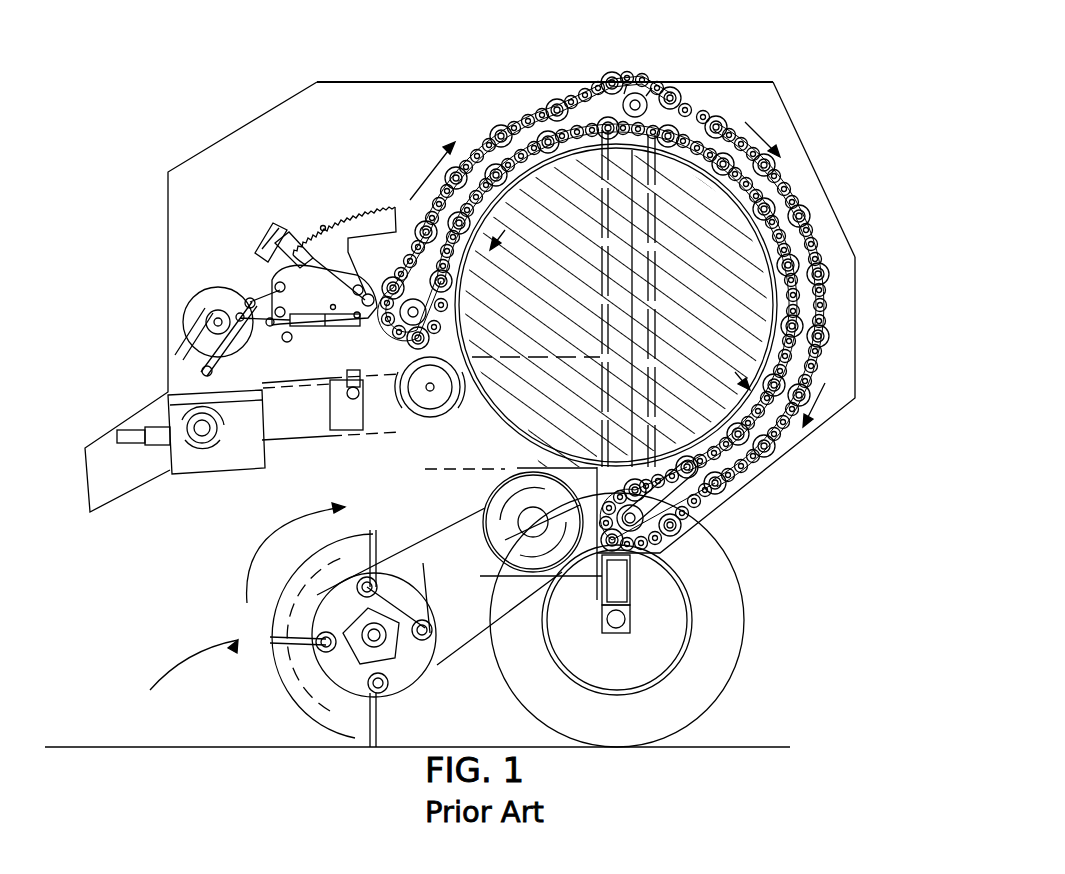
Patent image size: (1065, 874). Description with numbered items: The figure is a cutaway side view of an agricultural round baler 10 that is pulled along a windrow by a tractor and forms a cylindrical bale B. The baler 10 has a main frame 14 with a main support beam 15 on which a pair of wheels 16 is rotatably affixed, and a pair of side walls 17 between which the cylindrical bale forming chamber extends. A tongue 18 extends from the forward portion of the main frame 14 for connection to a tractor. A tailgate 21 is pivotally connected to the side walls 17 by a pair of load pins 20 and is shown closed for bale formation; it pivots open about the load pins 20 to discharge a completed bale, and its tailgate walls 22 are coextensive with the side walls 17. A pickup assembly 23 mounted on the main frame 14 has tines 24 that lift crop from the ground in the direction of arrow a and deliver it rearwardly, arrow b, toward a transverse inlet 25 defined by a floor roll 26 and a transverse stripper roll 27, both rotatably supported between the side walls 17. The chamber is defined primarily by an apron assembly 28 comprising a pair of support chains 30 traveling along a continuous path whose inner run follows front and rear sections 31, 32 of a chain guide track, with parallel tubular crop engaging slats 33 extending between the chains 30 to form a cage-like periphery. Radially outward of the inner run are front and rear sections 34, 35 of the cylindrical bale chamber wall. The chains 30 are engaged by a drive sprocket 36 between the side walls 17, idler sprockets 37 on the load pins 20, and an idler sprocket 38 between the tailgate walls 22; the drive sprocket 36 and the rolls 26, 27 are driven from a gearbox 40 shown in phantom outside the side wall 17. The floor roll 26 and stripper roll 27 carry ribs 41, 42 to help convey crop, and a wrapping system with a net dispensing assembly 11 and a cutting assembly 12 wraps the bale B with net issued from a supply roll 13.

The round baler 10 is at (920, 72).
The net dispensing assembly 11 is at (262, 215).
The cutting assembly 12 is at (317, 408).
The supply roll 13 is at (188, 298).
The main frame 14 is at (390, 82).
The main support beam 15 is at (690, 582).
The wheels 16 is at (742, 645).
The side walls 17 is at (258, 140).
The tongue 18 is at (108, 490).
The load pins 20 is at (648, 85).
The tailgate 21 is at (833, 200).
The tailgate walls 22 is at (842, 385).
The pickup assembly 23 is at (250, 620).
The tines 24 is at (365, 728).
The transverse inlet 25 is at (417, 457).
The floor roll 26 is at (518, 585).
The stripper roll 27 is at (400, 408).
The apron assembly 28 is at (790, 170).
The support chains 30 is at (815, 250).
The front section of chain guide track 31 is at (497, 140).
The rear section of chain guide track 32 is at (812, 240).
The crop engaging slats 33 is at (583, 87).
The front section of bale chamber wall 34 is at (588, 102).
The rear section of bale chamber wall 35 is at (690, 122).
The drive sprocket 36 is at (400, 285).
The idler sprockets 37 is at (636, 92).
The idler sprocket 38 is at (692, 515).
The gearbox 40 is at (203, 453).
The ribs 41 is at (562, 582).
The ribs 42 is at (393, 375).
The direction arrow a is at (182, 665).
The direction arrow b is at (280, 542).
The cylindrical bale B is at (765, 297).